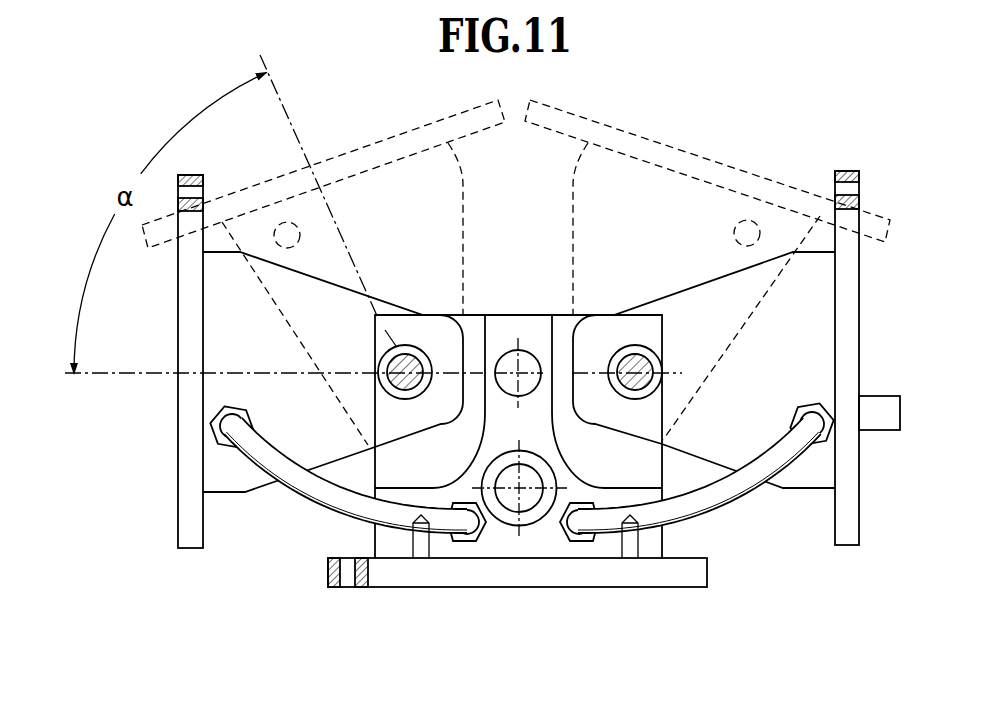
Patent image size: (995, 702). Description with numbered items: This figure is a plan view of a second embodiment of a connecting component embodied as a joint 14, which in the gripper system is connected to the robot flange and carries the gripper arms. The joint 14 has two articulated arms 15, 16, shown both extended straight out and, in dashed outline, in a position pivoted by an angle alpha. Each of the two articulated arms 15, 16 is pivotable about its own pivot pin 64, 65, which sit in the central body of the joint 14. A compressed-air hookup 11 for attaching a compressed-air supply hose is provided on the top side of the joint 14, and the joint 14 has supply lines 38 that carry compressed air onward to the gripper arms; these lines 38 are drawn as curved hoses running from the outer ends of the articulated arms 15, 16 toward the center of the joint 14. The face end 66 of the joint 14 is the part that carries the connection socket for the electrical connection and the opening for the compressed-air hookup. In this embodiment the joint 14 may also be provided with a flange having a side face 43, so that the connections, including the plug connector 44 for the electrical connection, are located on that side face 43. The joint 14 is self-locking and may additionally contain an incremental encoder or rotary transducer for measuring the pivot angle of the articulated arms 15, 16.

The compressed-air hookup 11 is at (528, 502).
The joint 14 is at (660, 137).
The articulated arm 15 is at (817, 485).
The articulated arm 16 is at (225, 492).
The supply line 38 is at (327, 503).
The side face 43 is at (862, 507).
The plug connector 44 is at (880, 404).
The pivot pin 64 is at (410, 354).
The pivot pin 65 is at (632, 354).
The face end 66 is at (597, 592).